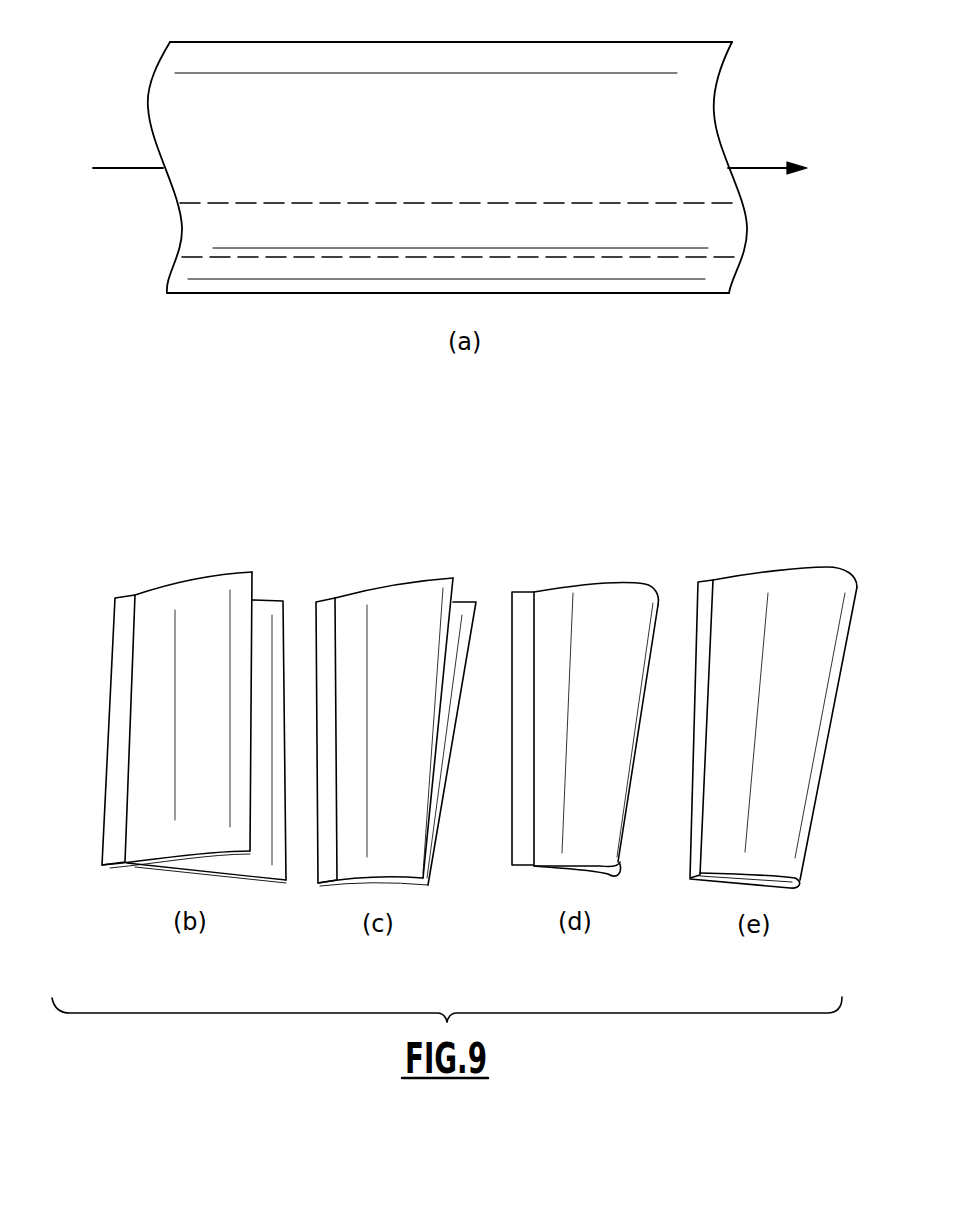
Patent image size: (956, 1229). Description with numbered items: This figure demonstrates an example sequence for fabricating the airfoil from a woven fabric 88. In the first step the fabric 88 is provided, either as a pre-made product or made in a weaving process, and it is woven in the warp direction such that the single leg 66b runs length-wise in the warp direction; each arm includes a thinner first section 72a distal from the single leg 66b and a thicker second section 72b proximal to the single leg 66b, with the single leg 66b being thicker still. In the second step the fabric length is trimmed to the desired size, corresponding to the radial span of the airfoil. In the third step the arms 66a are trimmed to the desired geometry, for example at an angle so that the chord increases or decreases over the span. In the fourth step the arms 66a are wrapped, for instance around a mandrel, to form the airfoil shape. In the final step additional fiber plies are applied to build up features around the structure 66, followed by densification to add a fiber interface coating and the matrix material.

The structure 66 is at (600, 835).
The arms 66a is at (468, 602).
The single leg 66b is at (577, 272).
The first section 72a is at (377, 185).
The second section 72b is at (415, 242).
The fabric 88 is at (302, 247).